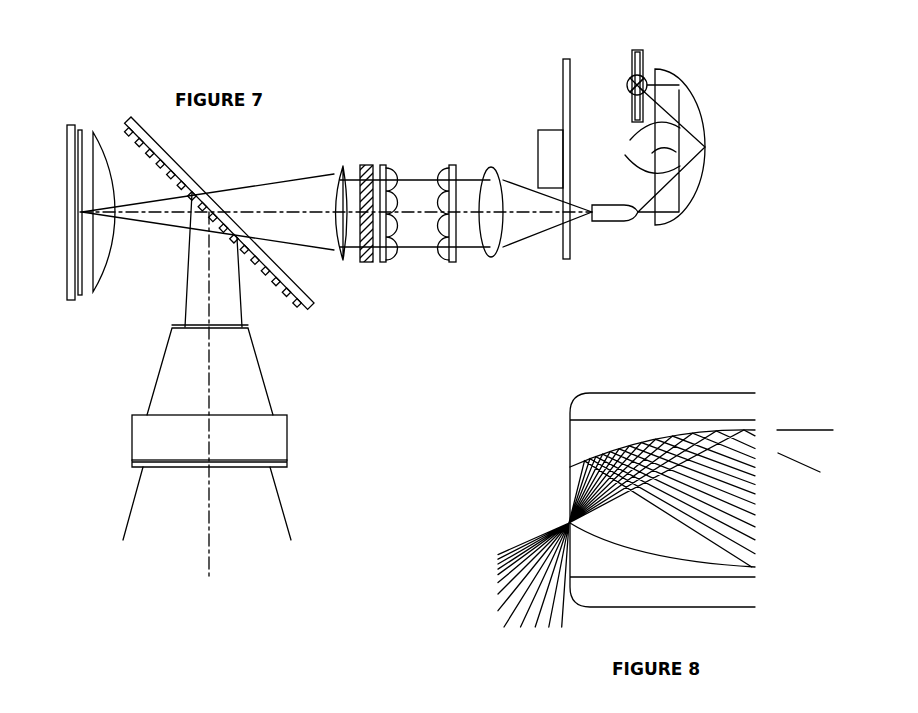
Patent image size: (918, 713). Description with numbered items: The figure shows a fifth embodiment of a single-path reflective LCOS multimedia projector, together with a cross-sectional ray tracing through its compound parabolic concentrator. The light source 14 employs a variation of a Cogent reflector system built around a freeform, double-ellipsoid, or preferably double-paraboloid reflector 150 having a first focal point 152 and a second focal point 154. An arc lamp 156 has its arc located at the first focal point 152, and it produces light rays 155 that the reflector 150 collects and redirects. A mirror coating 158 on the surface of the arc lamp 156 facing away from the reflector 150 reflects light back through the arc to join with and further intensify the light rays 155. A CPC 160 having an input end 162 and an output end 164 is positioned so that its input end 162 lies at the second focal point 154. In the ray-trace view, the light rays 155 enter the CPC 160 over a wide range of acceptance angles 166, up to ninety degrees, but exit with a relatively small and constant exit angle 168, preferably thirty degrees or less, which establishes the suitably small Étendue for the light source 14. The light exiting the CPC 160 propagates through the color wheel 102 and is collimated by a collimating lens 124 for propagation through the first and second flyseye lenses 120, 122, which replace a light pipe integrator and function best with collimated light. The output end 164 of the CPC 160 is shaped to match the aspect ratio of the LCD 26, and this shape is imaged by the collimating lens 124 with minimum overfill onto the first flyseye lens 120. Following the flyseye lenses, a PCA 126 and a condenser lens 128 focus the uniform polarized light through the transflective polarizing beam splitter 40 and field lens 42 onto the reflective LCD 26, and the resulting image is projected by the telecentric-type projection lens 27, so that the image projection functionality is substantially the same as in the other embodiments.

In FIG. 7, the light source 14 is at (745, 113).
In FIG. 7, the LCD 26 is at (70, 300).
In FIG. 7, the projection lens 27 is at (278, 490).
In FIG. 7, the transflective polarizing beam splitter 40 is at (180, 152).
In FIG. 7, the field lens 42 is at (107, 275).
In FIG. 7, the color wheel 102 is at (563, 88).
In FIG. 7, the first flyseye lens 120 is at (455, 165).
In FIG. 7, the second flyseye lens 122 is at (383, 165).
In FIG. 7, the collimating lens 124 is at (493, 257).
In FIG. 7, the PCA 126 is at (368, 263).
In FIG. 7, the condenser lens 128 is at (338, 170).
In FIG. 7, the double-paraboloid reflector 150 is at (697, 195).
In FIG. 7, the first focal point 152 is at (630, 92).
In FIG. 7, the second focal point 154 is at (638, 212).
In FIG. 7, the light rays 155 is at (652, 146).
In FIG. 8, the light rays 155 is at (533, 518).
In FIG. 7, the arc lamp 156 is at (650, 51).
In FIG. 7, the mirror coating 158 is at (627, 80).
In FIG. 7, the CPC 160 is at (608, 221).
In FIG. 8, the CPC 160 is at (685, 405).
In FIG. 8, the input end 162 is at (551, 476).
In FIG. 8, the output end 164 is at (774, 485).
In FIG. 8, the acceptance angles 166 is at (507, 547).
In FIG. 8, the exit angle 168 is at (818, 437).